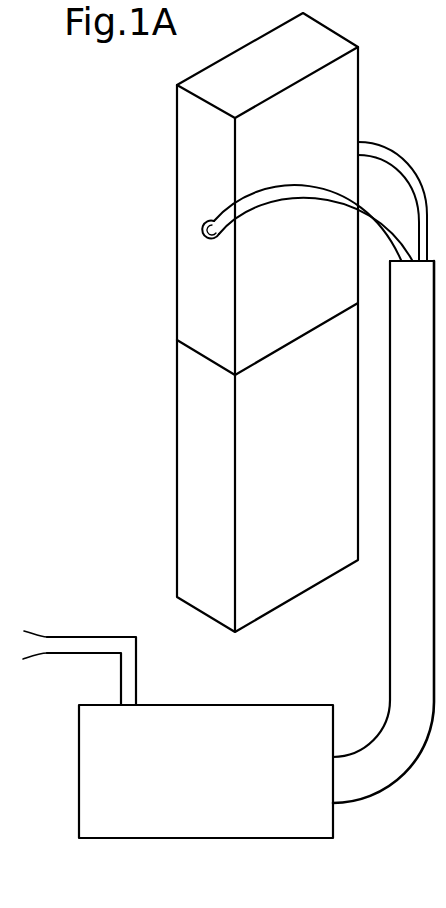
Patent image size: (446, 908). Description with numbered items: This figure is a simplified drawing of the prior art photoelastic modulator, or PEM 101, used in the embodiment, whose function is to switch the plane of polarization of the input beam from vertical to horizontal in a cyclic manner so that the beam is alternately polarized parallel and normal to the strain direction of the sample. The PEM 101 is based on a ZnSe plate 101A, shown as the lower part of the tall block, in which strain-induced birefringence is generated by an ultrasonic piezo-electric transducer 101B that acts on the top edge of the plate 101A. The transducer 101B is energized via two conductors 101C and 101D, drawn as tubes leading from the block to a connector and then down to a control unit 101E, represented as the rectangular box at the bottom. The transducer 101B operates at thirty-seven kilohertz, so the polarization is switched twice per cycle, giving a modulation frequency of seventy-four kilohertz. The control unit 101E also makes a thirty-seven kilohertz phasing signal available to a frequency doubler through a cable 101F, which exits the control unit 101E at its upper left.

The photoelastic modulator 101 is at (229, 316).
The ZnSe plate 101A is at (177, 493).
The ultrasonic piezo-electric transducer 101B is at (177, 313).
The conductor 101C is at (207, 220).
The conductor 101D is at (407, 168).
The control unit 101E is at (216, 838).
The cable 101F is at (137, 690).